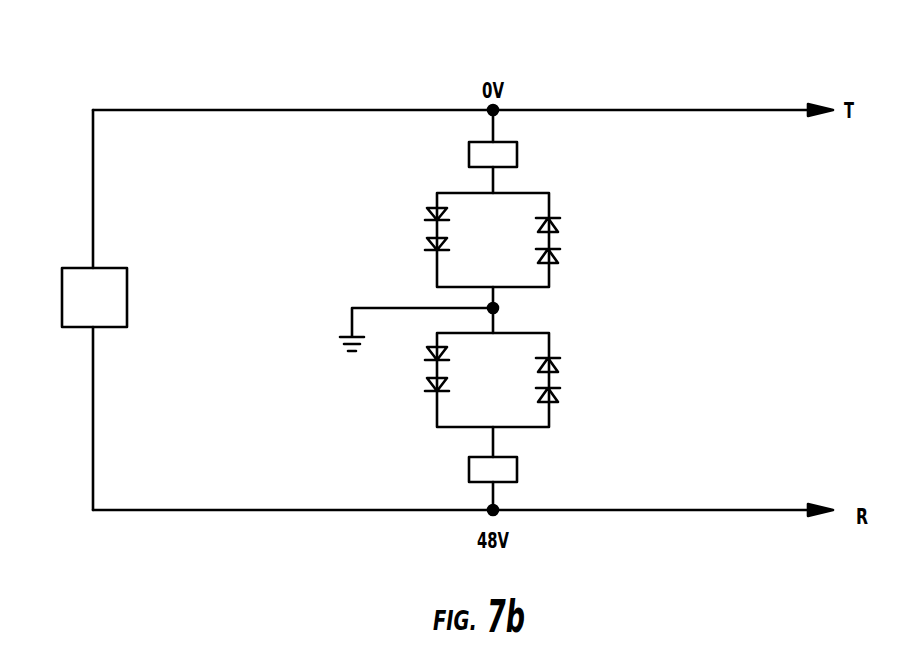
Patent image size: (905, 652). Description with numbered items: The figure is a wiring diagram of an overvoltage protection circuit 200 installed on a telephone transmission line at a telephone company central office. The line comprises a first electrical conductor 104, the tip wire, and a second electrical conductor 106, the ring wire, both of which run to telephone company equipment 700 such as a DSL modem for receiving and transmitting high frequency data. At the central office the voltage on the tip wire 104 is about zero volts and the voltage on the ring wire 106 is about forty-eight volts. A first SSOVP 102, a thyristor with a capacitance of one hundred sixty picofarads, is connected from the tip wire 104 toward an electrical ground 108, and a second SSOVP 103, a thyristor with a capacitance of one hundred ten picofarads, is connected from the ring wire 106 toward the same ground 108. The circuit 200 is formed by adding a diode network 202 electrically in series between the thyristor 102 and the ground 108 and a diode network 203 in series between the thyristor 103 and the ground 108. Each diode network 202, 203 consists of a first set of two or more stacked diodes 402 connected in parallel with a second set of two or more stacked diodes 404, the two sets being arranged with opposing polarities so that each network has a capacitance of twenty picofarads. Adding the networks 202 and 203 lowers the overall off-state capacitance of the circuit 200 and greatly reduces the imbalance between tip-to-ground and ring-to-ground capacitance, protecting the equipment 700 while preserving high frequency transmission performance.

The first electrical conductor 104 is at (152, 110).
The second electrical conductor 106 is at (205, 508).
The telephone company equipment 700 is at (62, 288).
The first SSOVP 102 is at (517, 155).
The second SSOVP 103 is at (517, 470).
The diode network 202 is at (553, 277).
The diode network 203 is at (553, 415).
The first set of stacked diodes 402 is at (428, 214).
The second set of stacked diodes 404 is at (560, 221).
The electrical ground 108 is at (350, 335).
The overvoltage protection circuit 200 is at (632, 62).